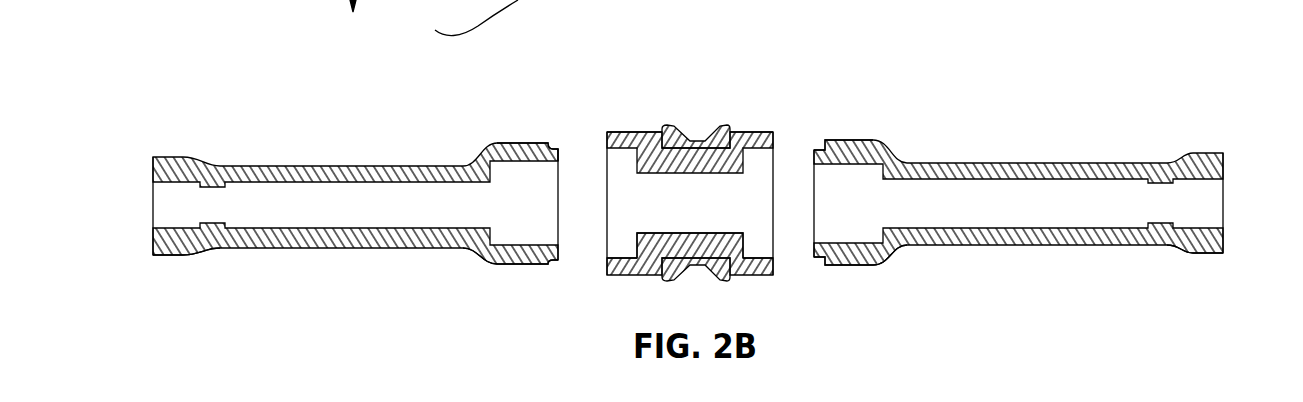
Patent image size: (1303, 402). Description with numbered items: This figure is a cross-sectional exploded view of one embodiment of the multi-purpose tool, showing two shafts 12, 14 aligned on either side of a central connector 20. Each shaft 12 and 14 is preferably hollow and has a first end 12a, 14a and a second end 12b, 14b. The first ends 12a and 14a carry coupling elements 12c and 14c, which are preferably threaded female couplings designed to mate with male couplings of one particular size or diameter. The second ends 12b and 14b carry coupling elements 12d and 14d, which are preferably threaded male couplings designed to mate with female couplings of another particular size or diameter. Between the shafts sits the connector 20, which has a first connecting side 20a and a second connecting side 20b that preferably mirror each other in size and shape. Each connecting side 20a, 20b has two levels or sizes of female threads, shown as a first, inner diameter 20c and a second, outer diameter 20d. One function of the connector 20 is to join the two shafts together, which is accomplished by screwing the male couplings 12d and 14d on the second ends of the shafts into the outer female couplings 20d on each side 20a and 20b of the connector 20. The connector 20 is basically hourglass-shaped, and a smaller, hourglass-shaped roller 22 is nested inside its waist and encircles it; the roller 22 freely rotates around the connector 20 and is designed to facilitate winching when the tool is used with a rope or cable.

The shaft 12 is at (316, 205).
The first end 12a is at (173, 256).
The second end 12b is at (510, 267).
The coupling element 12c is at (173, 232).
The coupling element 12d is at (557, 150).
The shaft 14 is at (1049, 205).
The first end 14a is at (1207, 255).
The second end 14b is at (850, 265).
The coupling element 14c is at (1208, 230).
The coupling element 14d is at (818, 150).
The connector 20 is at (693, 173).
The first connecting side 20a is at (607, 142).
The second connecting side 20b is at (778, 133).
The first, inner diameter 20c is at (650, 234).
The second, outer diameter 20d is at (623, 252).
The roller 22 is at (719, 127).